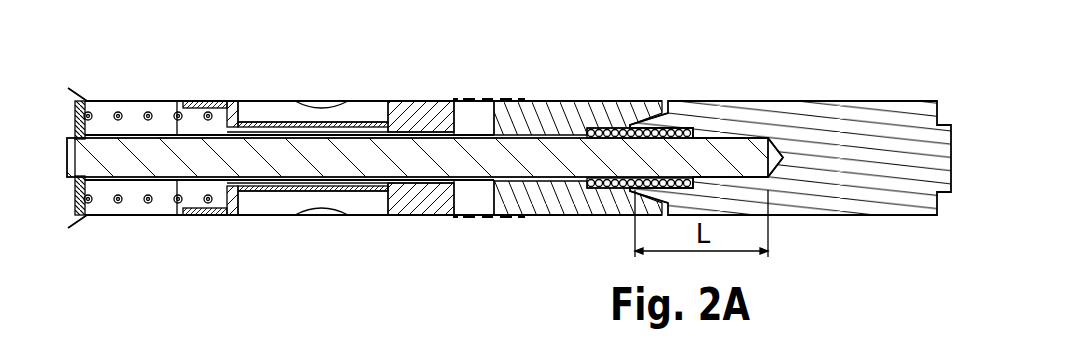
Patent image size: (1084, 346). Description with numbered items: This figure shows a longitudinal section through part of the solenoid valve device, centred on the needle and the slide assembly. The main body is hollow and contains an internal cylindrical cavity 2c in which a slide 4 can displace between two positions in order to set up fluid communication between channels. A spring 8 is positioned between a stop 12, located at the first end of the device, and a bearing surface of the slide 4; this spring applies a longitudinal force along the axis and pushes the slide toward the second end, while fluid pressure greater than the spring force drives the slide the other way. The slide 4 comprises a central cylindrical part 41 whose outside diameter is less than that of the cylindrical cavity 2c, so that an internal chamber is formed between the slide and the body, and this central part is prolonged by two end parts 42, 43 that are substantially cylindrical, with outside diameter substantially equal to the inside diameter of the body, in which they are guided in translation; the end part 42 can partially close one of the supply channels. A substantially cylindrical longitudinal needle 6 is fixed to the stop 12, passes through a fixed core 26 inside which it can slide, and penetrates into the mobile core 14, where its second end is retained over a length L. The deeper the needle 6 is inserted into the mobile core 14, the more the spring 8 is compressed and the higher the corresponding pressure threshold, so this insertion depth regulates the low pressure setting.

The internal cylindrical cavity 2c is at (250, 106).
The slide 4 is at (318, 99).
The longitudinal needle 6 is at (416, 157).
The spring 8 is at (147, 108).
The stop 12 is at (56, 123).
The mobile core 14 is at (845, 187).
The fixed core 26 is at (538, 115).
The central cylindrical part 41 is at (280, 192).
The end part 42 is at (218, 196).
The end part 43 is at (428, 214).